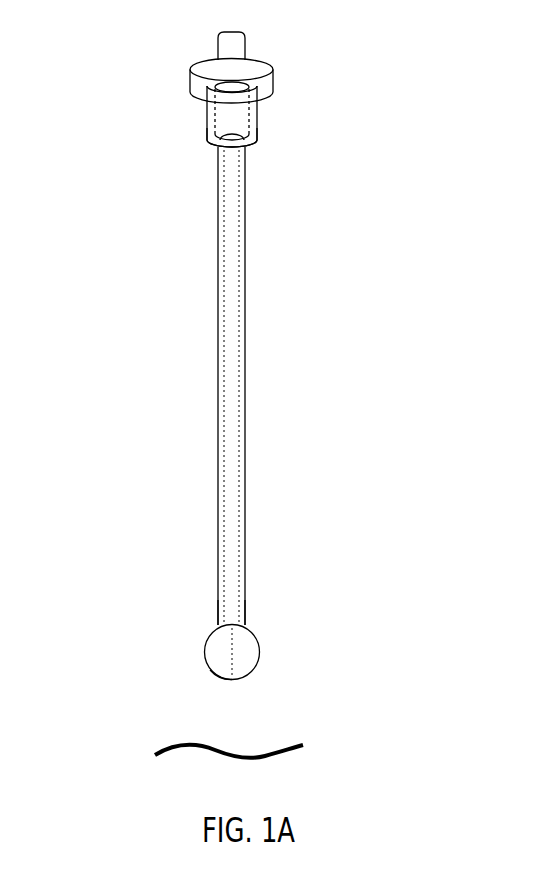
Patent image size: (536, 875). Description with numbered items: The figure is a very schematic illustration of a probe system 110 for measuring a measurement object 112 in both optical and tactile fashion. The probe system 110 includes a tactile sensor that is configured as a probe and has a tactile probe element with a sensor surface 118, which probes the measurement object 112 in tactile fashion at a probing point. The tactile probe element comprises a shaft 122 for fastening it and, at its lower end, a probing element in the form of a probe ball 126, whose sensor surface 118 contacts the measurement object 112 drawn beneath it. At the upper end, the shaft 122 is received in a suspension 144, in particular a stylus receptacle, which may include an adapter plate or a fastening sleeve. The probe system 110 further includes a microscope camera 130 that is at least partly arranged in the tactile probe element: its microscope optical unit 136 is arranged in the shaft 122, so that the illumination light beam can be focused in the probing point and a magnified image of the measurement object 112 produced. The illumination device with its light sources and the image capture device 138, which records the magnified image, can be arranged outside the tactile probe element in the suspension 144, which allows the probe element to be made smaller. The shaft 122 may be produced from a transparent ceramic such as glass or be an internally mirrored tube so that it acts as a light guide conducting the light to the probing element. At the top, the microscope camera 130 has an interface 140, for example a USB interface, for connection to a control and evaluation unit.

The probe system 110 is at (160, 120).
The interface 140 is at (236, 48).
The microscope camera 130 is at (262, 84).
The image capture device 138 is at (301, 114).
The suspension 144 is at (262, 131).
The shaft 122 is at (245, 355).
The microscope optical unit 136 is at (247, 606).
The probe ball 126 is at (250, 657).
The sensor surface 118 is at (208, 668).
The measurement object 112 is at (288, 757).